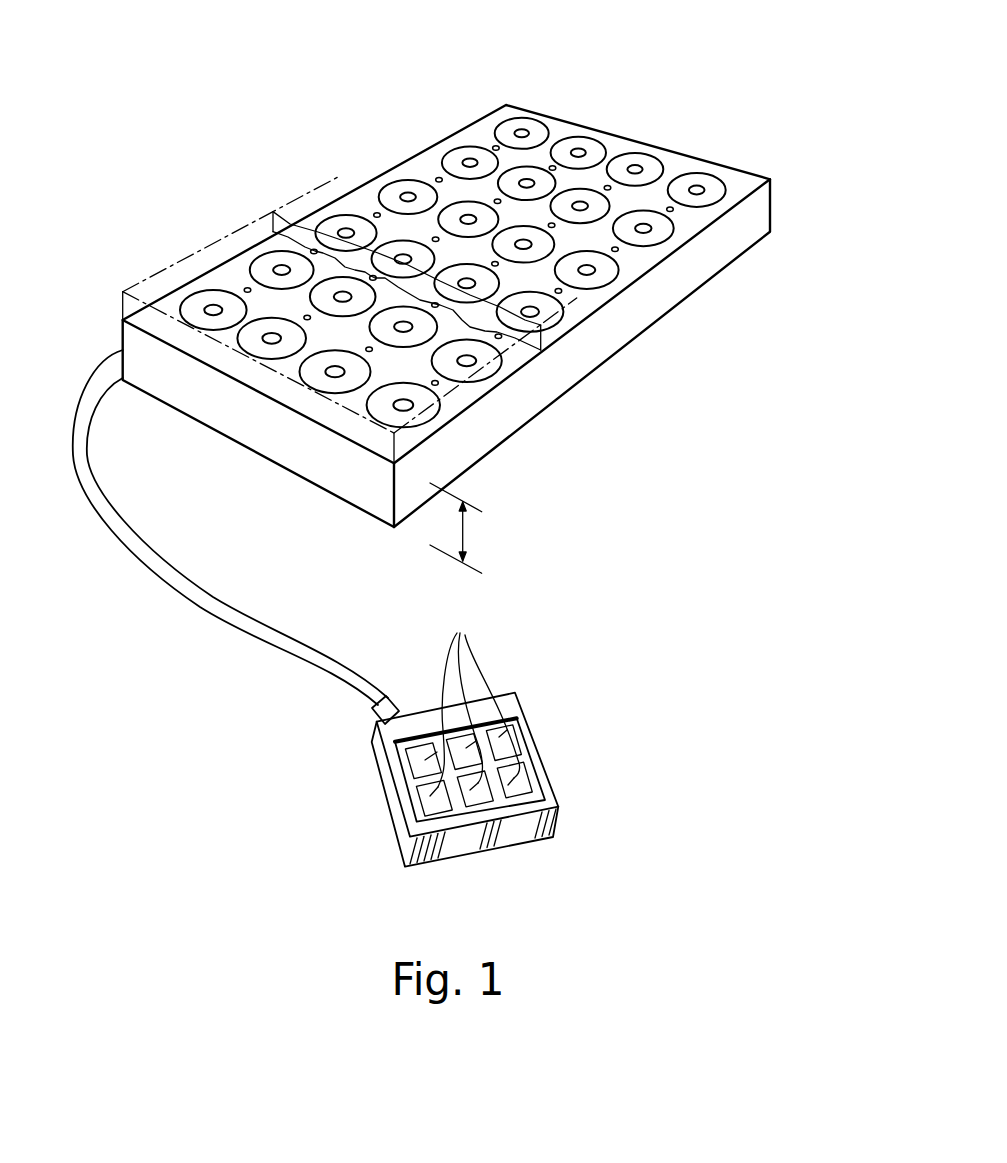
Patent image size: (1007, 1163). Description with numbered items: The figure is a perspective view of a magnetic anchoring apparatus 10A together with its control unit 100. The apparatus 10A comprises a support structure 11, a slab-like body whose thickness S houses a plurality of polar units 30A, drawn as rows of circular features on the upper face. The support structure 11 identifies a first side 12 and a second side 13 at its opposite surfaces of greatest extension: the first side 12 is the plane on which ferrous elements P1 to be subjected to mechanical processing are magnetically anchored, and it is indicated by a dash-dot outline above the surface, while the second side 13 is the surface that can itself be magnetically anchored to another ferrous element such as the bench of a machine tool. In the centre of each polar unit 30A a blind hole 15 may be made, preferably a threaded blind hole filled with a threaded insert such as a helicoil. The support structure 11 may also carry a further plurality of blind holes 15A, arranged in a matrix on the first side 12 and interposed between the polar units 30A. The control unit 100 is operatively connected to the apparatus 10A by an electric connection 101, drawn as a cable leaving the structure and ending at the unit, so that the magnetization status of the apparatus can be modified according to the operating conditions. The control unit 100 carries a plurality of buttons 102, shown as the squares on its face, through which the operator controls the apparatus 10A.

The magnetic anchoring apparatus 10A is at (608, 105).
The support structure 11 is at (711, 245).
The first side 12 is at (487, 128).
The second side 13 is at (533, 393).
The blind holes 15 is at (522, 130).
The further blind holes 15A is at (377, 213).
The polar units 30A is at (438, 180).
The ferrous elements P1 is at (240, 228).
The thickness S is at (463, 532).
The control unit 100 is at (343, 805).
The electric connection 101 is at (203, 615).
The buttons 102 is at (472, 702).